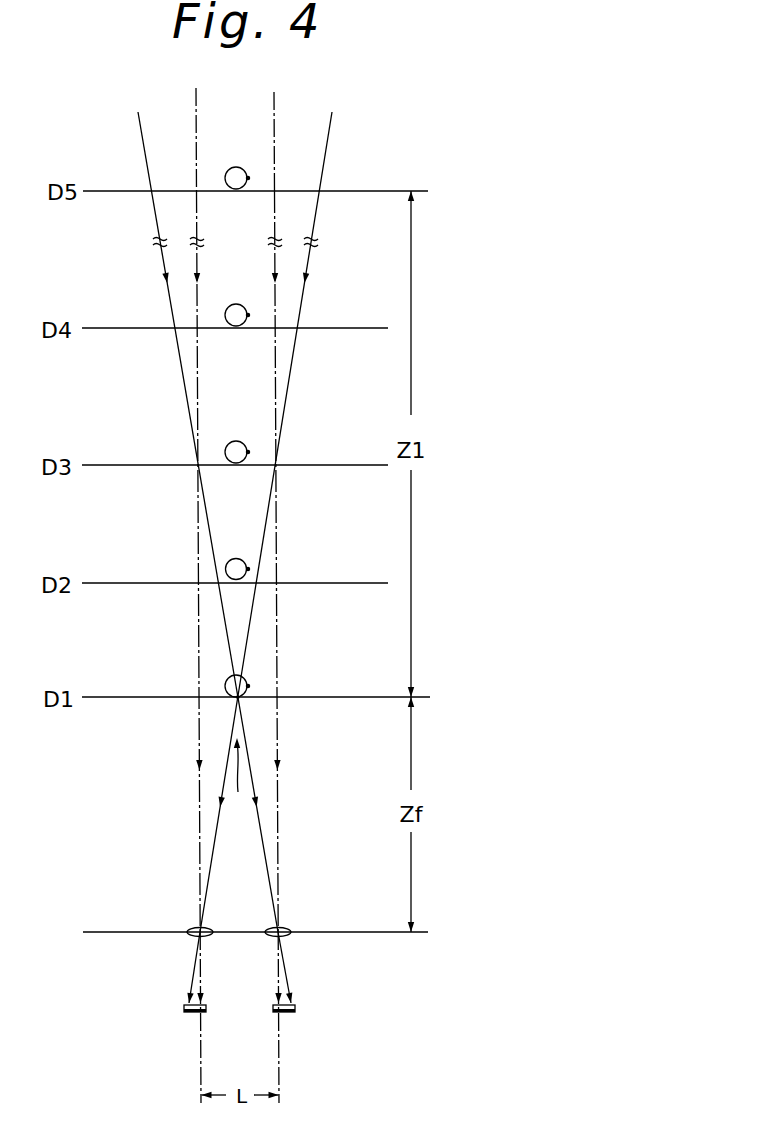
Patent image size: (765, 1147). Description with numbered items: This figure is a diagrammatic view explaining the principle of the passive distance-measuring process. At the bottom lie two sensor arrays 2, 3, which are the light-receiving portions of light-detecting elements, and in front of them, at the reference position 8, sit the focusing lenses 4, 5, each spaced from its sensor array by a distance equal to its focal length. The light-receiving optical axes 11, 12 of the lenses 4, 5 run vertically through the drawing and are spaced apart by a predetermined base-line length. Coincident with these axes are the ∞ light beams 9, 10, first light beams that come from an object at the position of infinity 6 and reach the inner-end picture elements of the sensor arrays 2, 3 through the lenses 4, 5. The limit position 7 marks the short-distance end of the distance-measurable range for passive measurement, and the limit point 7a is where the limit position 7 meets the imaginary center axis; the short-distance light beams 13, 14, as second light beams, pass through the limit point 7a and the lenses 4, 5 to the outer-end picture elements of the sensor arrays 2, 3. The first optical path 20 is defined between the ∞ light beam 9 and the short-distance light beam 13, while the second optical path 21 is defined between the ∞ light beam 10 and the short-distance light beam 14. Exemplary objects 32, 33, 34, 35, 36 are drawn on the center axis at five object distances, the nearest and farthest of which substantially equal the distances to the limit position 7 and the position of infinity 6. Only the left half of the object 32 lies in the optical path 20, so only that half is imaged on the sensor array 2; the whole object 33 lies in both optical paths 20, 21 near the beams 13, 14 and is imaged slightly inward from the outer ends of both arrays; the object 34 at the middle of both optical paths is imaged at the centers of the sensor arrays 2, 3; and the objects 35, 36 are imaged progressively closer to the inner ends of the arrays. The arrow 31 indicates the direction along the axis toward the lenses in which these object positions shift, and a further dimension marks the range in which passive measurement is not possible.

The sensor array 2 is at (177, 1011).
The sensor array 3 is at (302, 1010).
The focusing lens 4 is at (195, 925).
The focusing lens 5 is at (288, 925).
The position of infinity 6 is at (375, 190).
The limit position 7 is at (359, 695).
The limit point 7a is at (233, 699).
The reference position 8 is at (378, 930).
The ∞ light beam 9 is at (195, 615).
The ∞ light beam 10 is at (280, 614).
The light-receiving optical axis 11 is at (194, 99).
The light-receiving optical axis 12 is at (276, 118).
The short-distance light beam 13 is at (214, 858).
The short-distance light beam 14 is at (269, 883).
The first optical path 20 is at (224, 738).
The second optical path 21 is at (273, 738).
The direction of object movement 31 is at (252, 826).
The object 32 is at (247, 680).
The object 33 is at (236, 557).
The object 34 is at (236, 440).
The object 35 is at (236, 303).
The object 36 is at (236, 166).